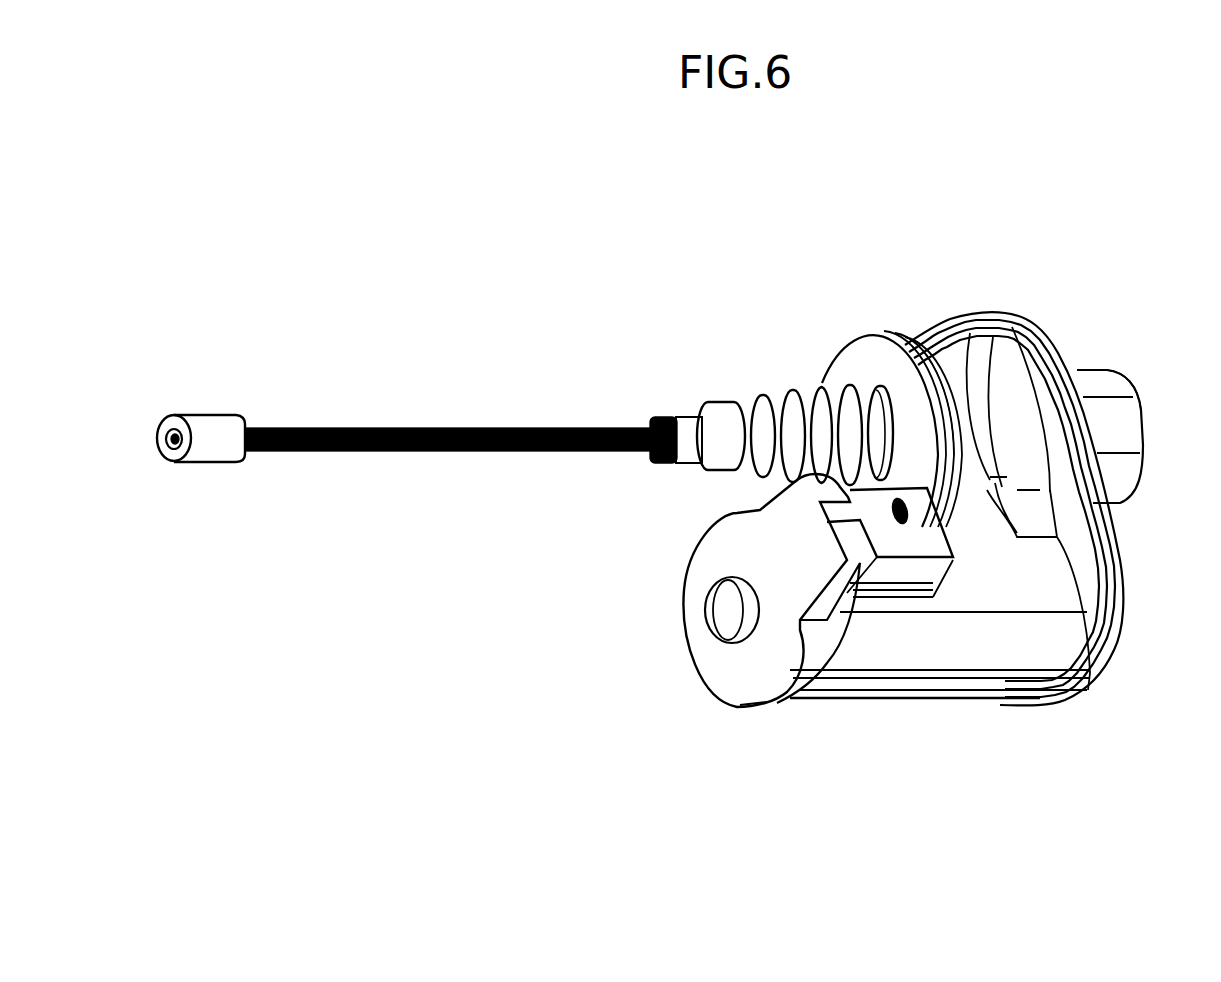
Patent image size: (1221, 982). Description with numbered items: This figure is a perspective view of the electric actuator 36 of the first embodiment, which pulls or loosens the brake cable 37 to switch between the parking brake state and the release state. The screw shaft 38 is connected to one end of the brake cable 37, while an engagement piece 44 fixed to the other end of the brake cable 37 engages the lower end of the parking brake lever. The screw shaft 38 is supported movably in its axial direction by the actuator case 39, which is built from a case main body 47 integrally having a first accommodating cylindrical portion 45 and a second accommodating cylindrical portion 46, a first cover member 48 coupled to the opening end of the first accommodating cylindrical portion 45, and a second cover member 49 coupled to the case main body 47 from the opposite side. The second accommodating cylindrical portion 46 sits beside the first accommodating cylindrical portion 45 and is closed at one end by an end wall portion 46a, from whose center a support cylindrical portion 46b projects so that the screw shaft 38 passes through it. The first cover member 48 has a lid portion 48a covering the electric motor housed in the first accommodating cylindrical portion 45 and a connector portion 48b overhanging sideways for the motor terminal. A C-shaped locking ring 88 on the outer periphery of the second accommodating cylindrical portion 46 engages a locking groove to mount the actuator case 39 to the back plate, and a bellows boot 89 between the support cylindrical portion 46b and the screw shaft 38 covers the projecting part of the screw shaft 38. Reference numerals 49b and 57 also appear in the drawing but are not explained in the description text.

The electric actuator 36 is at (1081, 714).
The brake cable 37 is at (500, 420).
The screw shaft 38 is at (662, 420).
The actuator case 39 is at (1057, 320).
The engagement piece 44 is at (210, 425).
The first accommodating cylindrical portion 45 is at (950, 690).
The second accommodating cylindrical portion 46 is at (980, 367).
The end wall portion 46a is at (860, 365).
The support cylindrical portion 46b is at (995, 485).
The case main body 47 is at (912, 706).
The first cover member 48 is at (774, 613).
The lid portion 48a is at (705, 652).
The connector portion 48b is at (920, 545).
The second cover member 49 is at (1142, 517).
The boss portion 49b is at (1130, 415).
The housing end wall 57 is at (771, 718).
The C-shaped locking ring 88 is at (913, 333).
The bellows boot 89 is at (737, 403).